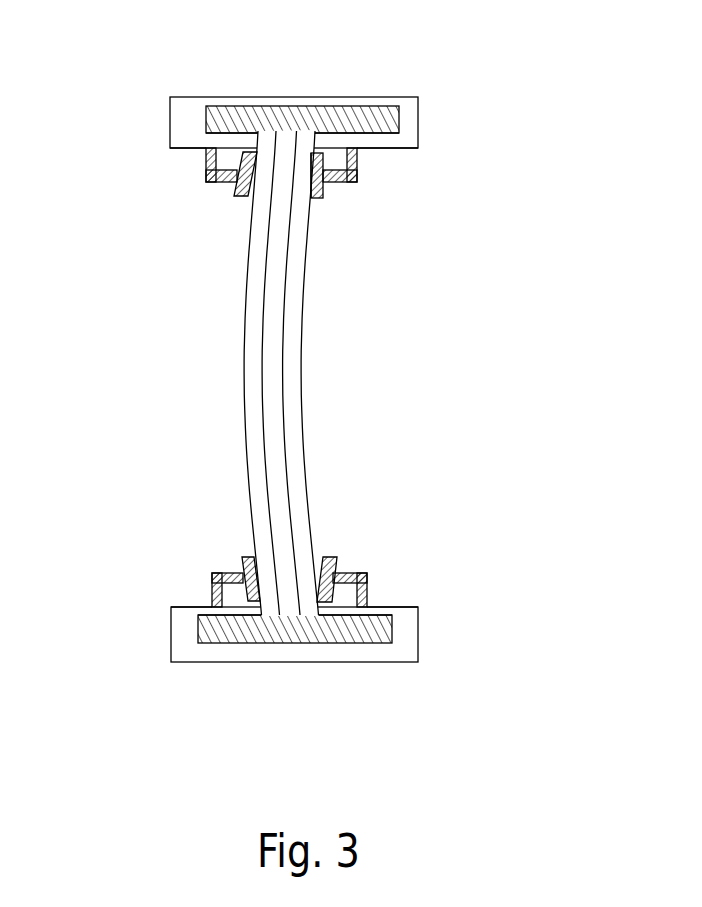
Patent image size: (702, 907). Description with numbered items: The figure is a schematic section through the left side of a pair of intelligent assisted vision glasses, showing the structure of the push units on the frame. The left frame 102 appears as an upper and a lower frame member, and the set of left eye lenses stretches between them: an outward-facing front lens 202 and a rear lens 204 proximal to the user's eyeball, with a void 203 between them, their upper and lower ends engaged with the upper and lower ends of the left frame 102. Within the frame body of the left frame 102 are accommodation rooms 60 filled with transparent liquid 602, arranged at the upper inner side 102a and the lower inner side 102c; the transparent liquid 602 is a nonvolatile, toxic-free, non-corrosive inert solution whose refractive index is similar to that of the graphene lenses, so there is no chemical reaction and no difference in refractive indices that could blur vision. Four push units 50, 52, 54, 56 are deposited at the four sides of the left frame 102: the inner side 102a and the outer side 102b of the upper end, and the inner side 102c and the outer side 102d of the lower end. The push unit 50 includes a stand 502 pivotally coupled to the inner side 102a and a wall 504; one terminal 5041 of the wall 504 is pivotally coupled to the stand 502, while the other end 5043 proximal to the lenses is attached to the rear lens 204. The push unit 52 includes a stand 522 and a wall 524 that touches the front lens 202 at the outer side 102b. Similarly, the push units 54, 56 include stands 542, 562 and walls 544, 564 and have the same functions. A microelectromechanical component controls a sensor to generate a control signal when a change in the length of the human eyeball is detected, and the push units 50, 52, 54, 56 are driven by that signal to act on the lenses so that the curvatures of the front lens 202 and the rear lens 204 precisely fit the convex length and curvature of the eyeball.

The left frame 102 is at (418, 123).
The inner side of the upper end of the left frame 102a is at (408, 150).
The outer side of the upper end of the left frame 102b is at (188, 148).
The inner side of the lower end of the left frame 102c is at (415, 605).
The outer side of the lower end of the left frame 102d is at (172, 607).
The accommodation room 60 is at (388, 105).
The transparent liquid 602 is at (228, 115).
The front lens 202 is at (245, 402).
The void 203 is at (277, 352).
The rear lens 204 is at (302, 375).
The push unit 50 is at (383, 246).
The stand 502 is at (358, 165).
The one terminal of the wall 5041 is at (335, 180).
The wall 504 is at (322, 197).
The other end of the wall 5043 is at (316, 202).
The push unit 52 is at (187, 237).
The stand 522 is at (203, 168).
The wall 524 is at (242, 195).
The push unit 54 is at (363, 530).
The stand 542 is at (358, 575).
The wall 544 is at (332, 557).
The push unit 56 is at (207, 536).
The stand 562 is at (217, 573).
The wall 564 is at (248, 557).